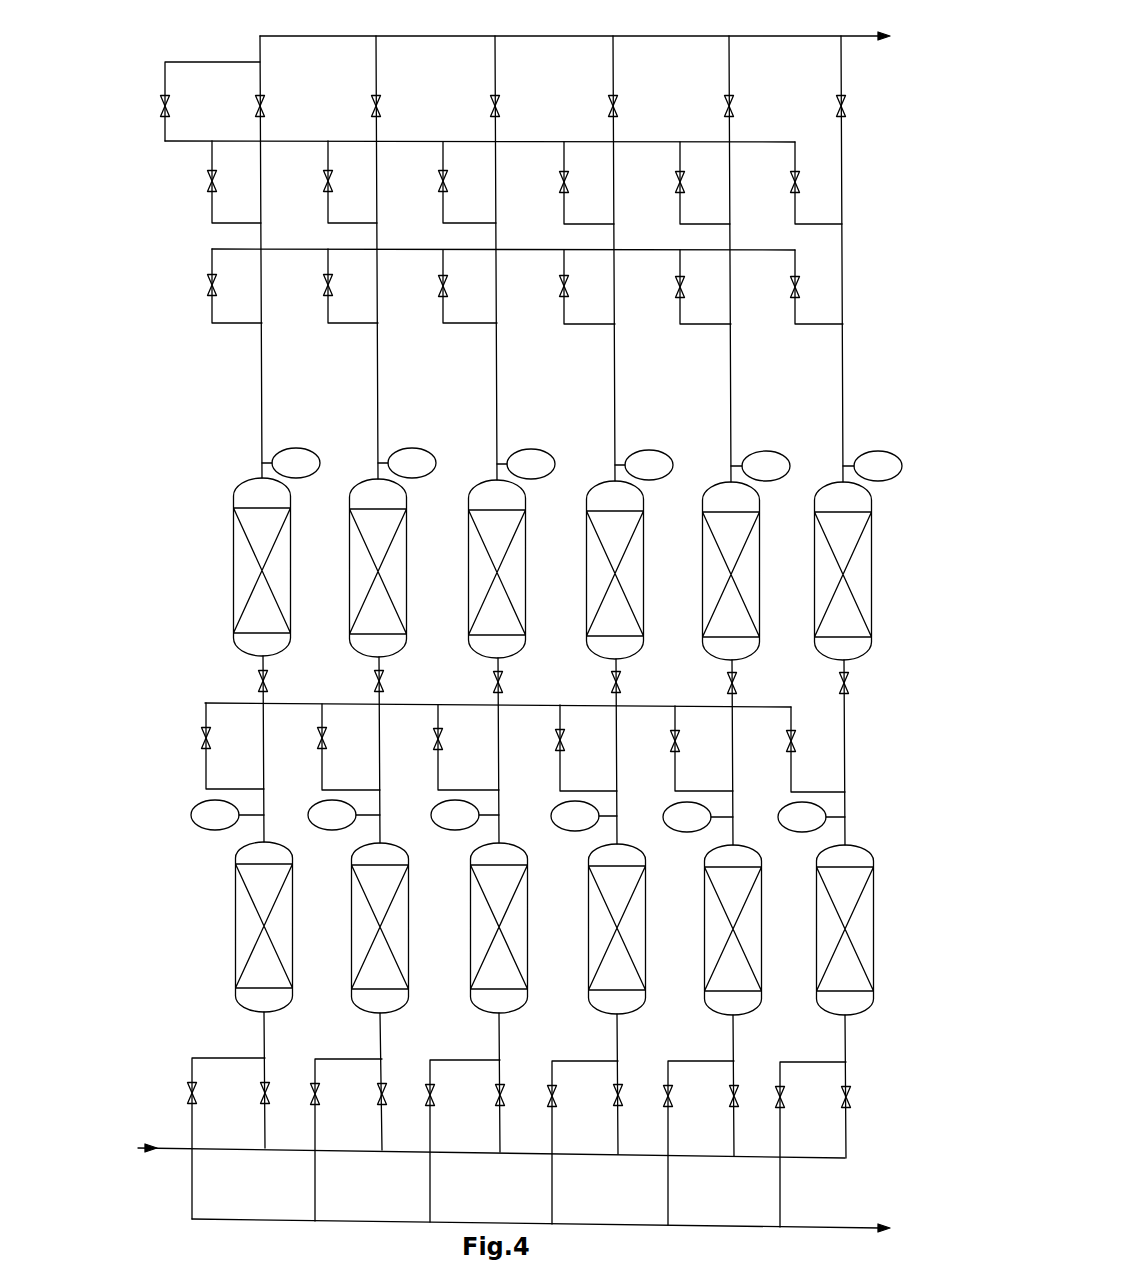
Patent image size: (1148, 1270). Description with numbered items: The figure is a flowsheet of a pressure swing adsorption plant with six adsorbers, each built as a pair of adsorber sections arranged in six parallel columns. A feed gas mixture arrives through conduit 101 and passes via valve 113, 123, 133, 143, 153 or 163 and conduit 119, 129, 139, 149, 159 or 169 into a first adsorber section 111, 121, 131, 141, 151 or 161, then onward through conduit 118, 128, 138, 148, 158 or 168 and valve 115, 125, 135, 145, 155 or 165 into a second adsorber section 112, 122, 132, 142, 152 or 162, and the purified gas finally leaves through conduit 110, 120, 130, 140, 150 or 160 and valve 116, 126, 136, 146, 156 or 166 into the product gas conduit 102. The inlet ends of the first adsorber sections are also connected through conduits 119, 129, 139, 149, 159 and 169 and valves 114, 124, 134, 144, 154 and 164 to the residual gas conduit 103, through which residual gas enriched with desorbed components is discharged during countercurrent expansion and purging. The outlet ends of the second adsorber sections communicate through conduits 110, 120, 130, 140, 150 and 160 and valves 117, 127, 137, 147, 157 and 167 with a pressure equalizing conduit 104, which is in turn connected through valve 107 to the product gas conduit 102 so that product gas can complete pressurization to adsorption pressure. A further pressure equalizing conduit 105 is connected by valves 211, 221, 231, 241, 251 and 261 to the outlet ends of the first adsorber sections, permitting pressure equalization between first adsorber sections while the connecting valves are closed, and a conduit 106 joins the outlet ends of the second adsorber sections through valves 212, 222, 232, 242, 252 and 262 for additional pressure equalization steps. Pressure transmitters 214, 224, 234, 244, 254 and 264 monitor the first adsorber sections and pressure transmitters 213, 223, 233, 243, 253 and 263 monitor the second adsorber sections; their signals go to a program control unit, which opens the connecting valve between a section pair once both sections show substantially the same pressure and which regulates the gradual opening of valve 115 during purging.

The feed gas conduit 101 is at (138, 1153).
The product gas conduit 102 is at (858, 36).
The residual gas conduit 103 is at (358, 1217).
The pressure equalizing conduit 104 is at (554, 140).
The pressure equalizing conduit 105 is at (205, 705).
The conduit 106 is at (523, 247).
The valve 107 is at (171, 106).
The conduit 110 is at (262, 397).
The first adsorber section 111 is at (234, 920).
The second adsorber section 112 is at (231, 558).
The valve 113 is at (262, 1100).
The valve 114 is at (187, 1093).
The valve 115 is at (256, 681).
The valve 116 is at (266, 106).
The valve 117 is at (207, 181).
The conduit 118 is at (265, 742).
The conduit 119 is at (266, 1040).
The conduit 120 is at (378, 378).
The first adsorber section 121 is at (352, 922).
The second adsorber section 122 is at (350, 558).
The valve 123 is at (378, 1100).
The valve 124 is at (312, 1094).
The valve 125 is at (372, 681).
The valve 126 is at (382, 106).
The valve 127 is at (323, 181).
The conduit 128 is at (381, 745).
The conduit 129 is at (383, 1042).
The conduit 130 is at (497, 380).
The first adsorber section 131 is at (468, 922).
The second adsorber section 132 is at (468, 558).
The valve 133 is at (496, 1100).
The valve 134 is at (428, 1094).
The valve 135 is at (490, 682).
The valve 136 is at (500, 106).
The valve 137 is at (438, 181).
The conduit 138 is at (499, 745).
The conduit 139 is at (501, 1042).
The conduit 140 is at (615, 395).
The first adsorber section 141 is at (588, 924).
The second adsorber section 142 is at (586, 560).
The valve 143 is at (614, 1102).
The valve 144 is at (548, 1096).
The valve 145 is at (612, 682).
The valve 146 is at (618, 106).
The valve 147 is at (558, 181).
The conduit 148 is at (617, 748).
The conduit 149 is at (618, 1045).
The conduit 150 is at (731, 404).
The first adsorber section 151 is at (705, 924).
The second adsorber section 152 is at (703, 560).
The valve 153 is at (730, 1103).
The valve 154 is at (665, 1097).
The valve 155 is at (728, 682).
The valve 156 is at (735, 106).
The valve 157 is at (675, 182).
The conduit 158 is at (733, 757).
The conduit 159 is at (734, 1048).
The conduit 160 is at (843, 360).
The first adsorber section 161 is at (820, 924).
The second adsorber section 162 is at (816, 560).
The valve 163 is at (850, 1103).
The valve 164 is at (778, 1097).
The valve 165 is at (840, 683).
The valve 166 is at (846, 106).
The valve 167 is at (795, 183).
The conduit 168 is at (845, 760).
The conduit 169 is at (846, 1048).
The valve 211 is at (200, 742).
The valve 212 is at (207, 289).
The pressure transmitter 213 is at (295, 447).
The pressure transmitter 214 is at (218, 832).
The valve 221 is at (318, 742).
The valve 222 is at (323, 289).
The pressure transmitter 223 is at (412, 448).
The pressure transmitter 224 is at (334, 832).
The valve 231 is at (433, 742).
The valve 232 is at (438, 289).
The pressure transmitter 233 is at (531, 449).
The pressure transmitter 234 is at (456, 832).
The valve 241 is at (555, 742).
The valve 242 is at (559, 289).
The pressure transmitter 243 is at (648, 450).
The pressure transmitter 244 is at (572, 834).
The valve 251 is at (671, 749).
The valve 252 is at (676, 290).
The pressure transmitter 253 is at (765, 451).
The pressure transmitter 254 is at (686, 835).
The valve 261 is at (787, 752).
The valve 262 is at (791, 292).
The pressure transmitter 263 is at (878, 451).
The pressure transmitter 264 is at (800, 835).